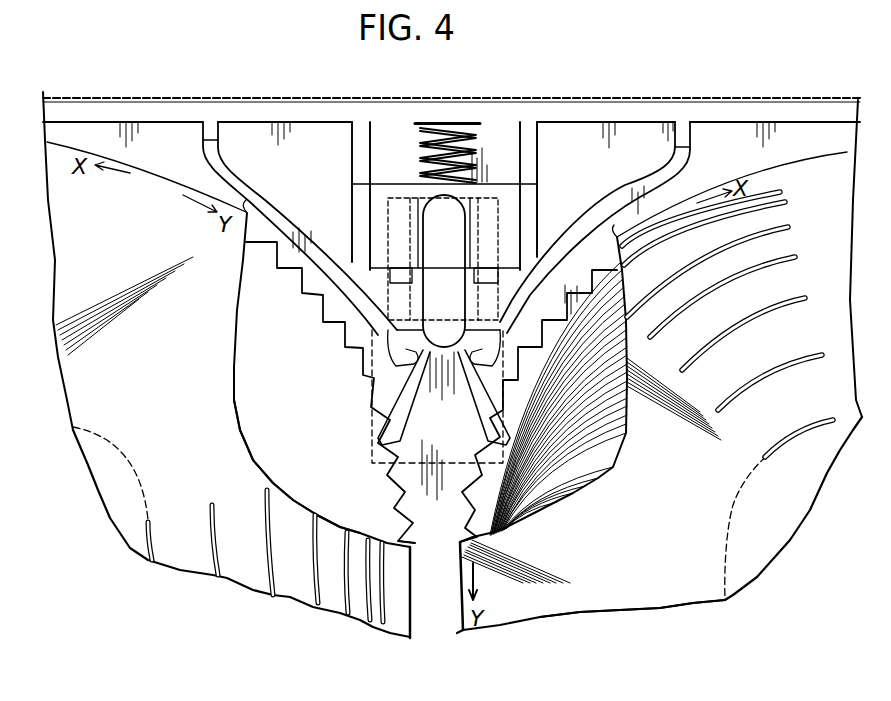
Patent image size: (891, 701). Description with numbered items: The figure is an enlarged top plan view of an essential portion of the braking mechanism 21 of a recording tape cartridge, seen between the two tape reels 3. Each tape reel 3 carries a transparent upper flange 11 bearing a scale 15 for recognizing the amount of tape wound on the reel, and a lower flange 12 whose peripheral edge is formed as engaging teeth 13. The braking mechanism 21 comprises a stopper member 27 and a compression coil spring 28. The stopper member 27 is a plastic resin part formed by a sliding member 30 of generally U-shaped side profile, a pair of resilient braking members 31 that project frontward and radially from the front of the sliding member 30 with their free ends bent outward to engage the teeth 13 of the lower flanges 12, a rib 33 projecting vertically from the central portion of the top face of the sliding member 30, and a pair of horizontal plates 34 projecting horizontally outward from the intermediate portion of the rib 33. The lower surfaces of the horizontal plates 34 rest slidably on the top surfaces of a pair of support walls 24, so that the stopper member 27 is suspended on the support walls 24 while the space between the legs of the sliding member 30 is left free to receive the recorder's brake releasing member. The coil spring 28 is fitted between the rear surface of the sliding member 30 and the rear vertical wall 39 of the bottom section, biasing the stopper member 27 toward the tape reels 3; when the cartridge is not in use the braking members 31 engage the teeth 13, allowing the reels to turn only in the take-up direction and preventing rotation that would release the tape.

The tape reel 3 is at (467, 521).
The upper flange 11 is at (228, 437).
The lower flange 12 is at (243, 329).
The engaging teeth 13 is at (404, 514).
The scale 15 is at (270, 522).
The braking mechanism 21 is at (403, 160).
The support walls 24 is at (360, 150).
The stopper member 27 is at (505, 220).
The coil spring 28 is at (478, 150).
The sliding member 30 is at (444, 415).
The resilient braking members 31 is at (444, 397).
The rib 33 is at (452, 288).
The horizontal plates 34 is at (405, 188).
The rear vertical wall 39 is at (618, 122).